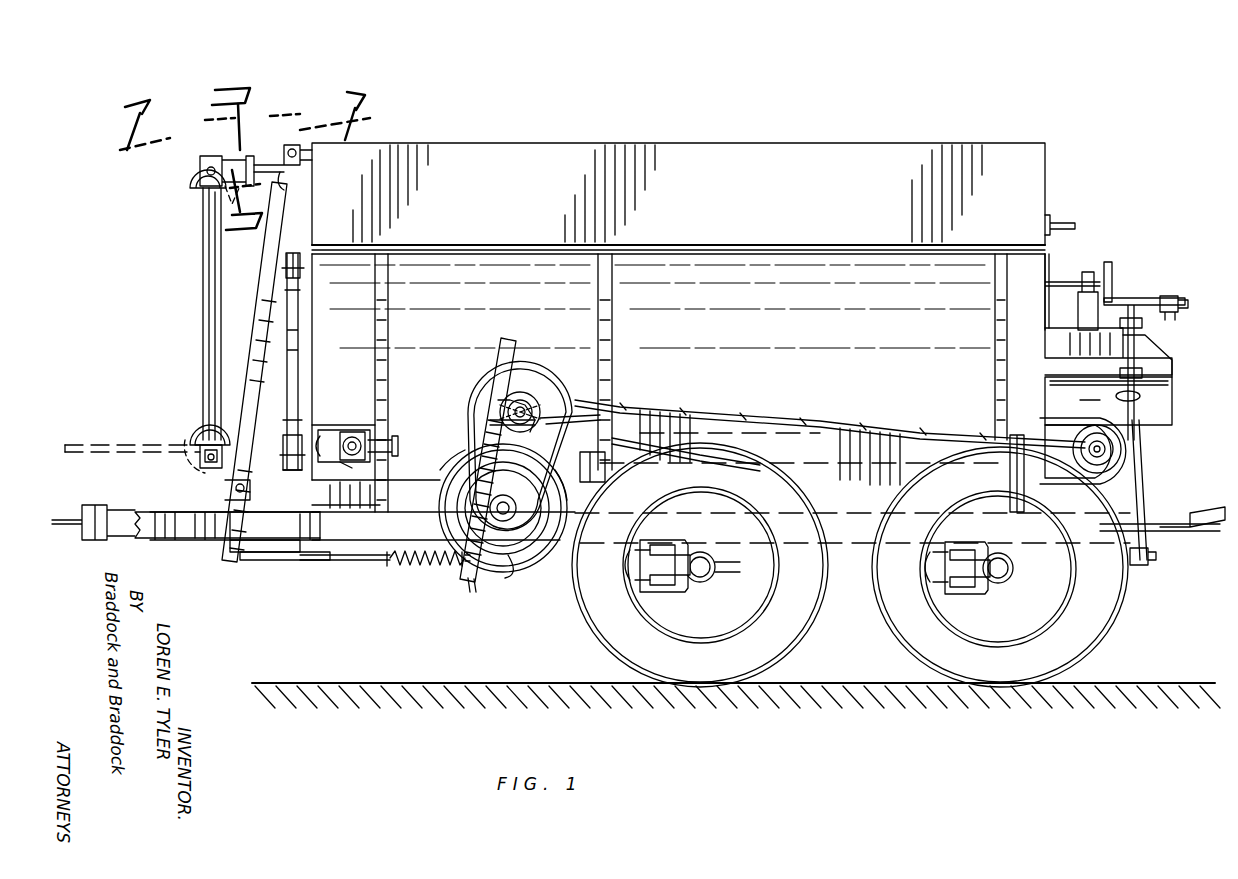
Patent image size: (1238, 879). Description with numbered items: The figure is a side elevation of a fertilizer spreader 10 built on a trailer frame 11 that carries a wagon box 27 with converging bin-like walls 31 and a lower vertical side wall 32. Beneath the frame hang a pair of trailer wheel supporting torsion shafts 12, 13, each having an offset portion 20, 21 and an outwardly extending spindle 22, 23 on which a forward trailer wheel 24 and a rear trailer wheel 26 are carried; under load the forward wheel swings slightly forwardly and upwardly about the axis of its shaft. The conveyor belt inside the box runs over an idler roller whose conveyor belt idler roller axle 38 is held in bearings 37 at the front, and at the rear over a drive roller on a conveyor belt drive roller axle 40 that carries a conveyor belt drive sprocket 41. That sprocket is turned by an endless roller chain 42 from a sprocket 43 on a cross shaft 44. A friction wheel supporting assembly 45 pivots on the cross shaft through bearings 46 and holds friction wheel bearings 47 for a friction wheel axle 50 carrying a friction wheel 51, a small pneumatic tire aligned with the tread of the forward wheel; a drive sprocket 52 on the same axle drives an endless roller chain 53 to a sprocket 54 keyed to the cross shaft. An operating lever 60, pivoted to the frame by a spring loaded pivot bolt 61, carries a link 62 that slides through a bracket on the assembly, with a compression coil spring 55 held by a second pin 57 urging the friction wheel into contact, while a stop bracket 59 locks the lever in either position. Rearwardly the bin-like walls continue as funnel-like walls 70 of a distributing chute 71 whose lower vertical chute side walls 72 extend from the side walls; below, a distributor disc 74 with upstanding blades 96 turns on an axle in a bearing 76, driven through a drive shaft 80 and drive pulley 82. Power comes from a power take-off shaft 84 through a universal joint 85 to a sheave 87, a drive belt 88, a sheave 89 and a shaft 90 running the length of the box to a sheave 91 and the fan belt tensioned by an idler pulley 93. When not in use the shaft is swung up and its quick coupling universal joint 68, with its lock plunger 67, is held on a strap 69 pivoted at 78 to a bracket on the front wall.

The fertilizer spreader 10 is at (363, 606).
The trailer frame 11 is at (190, 536).
The trailer wheel supporting torsion shaft 12 is at (648, 580).
The trailer wheel supporting torsion shaft 13 is at (960, 594).
The offset portion 20 is at (672, 588).
The offset portion 21 is at (970, 592).
The spindle 22 is at (716, 568).
The spindle 23 is at (1013, 570).
The forward trailer wheel 24 is at (775, 645).
The rear trailer wheel 26 is at (1095, 612).
The wagon box 27 is at (1030, 208).
The bin-like wall 31 is at (768, 268).
The lower parallel vertical side wall 32 is at (900, 420).
The bearing 37 is at (352, 425).
The conveyor belt idler roller axle 38 is at (356, 466).
The conveyor belt drive roller axle 40 is at (1150, 475).
The conveyor belt drive sprocket 41 is at (1115, 455).
The endless roller chain 42 is at (720, 428).
The sprocket 43 is at (605, 402).
The cross shaft 44 is at (540, 395).
The friction wheel supporting assembly 45 is at (462, 585).
The bearing 46 is at (545, 378).
The friction wheel bearing 47 is at (520, 570).
The friction wheel axle 50 is at (448, 505).
The friction wheel 51 is at (470, 458).
The drive sprocket 52 is at (585, 492).
The endless roller chain 53 is at (480, 378).
The sprocket 54 is at (480, 404).
The compression coil spring 55 is at (420, 565).
The second pin 57 is at (380, 565).
The stop bracket 59 is at (290, 554).
The operating lever 60 is at (264, 285).
The spring loaded pivot bolt 61 is at (236, 488).
The link 62 is at (305, 562).
The lock plunger 67 is at (231, 200).
The quick coupling universal joint 68 is at (203, 156).
The strap 69 is at (264, 158).
The funnel-like wall 70 is at (1150, 398).
The distributing chute 71 is at (1184, 354).
The vertical chute side wall 72 is at (1148, 505).
The distributor disc 74 is at (1180, 535).
The bearing 76 is at (1156, 562).
The pivot 78 is at (291, 178).
The drive shaft 80 is at (1060, 348).
The drive pulley 82 is at (1125, 300).
The power take-off shaft 84 is at (100, 455).
The universal joint 85 is at (203, 438).
The sheave 87 is at (280, 440).
The drive belt 88 is at (290, 362).
The sheave 89 is at (293, 252).
The shaft 90 is at (1060, 282).
The sheave 91 is at (1112, 280).
The idler pulley 93 is at (1185, 306).
The blade 96 is at (1222, 512).